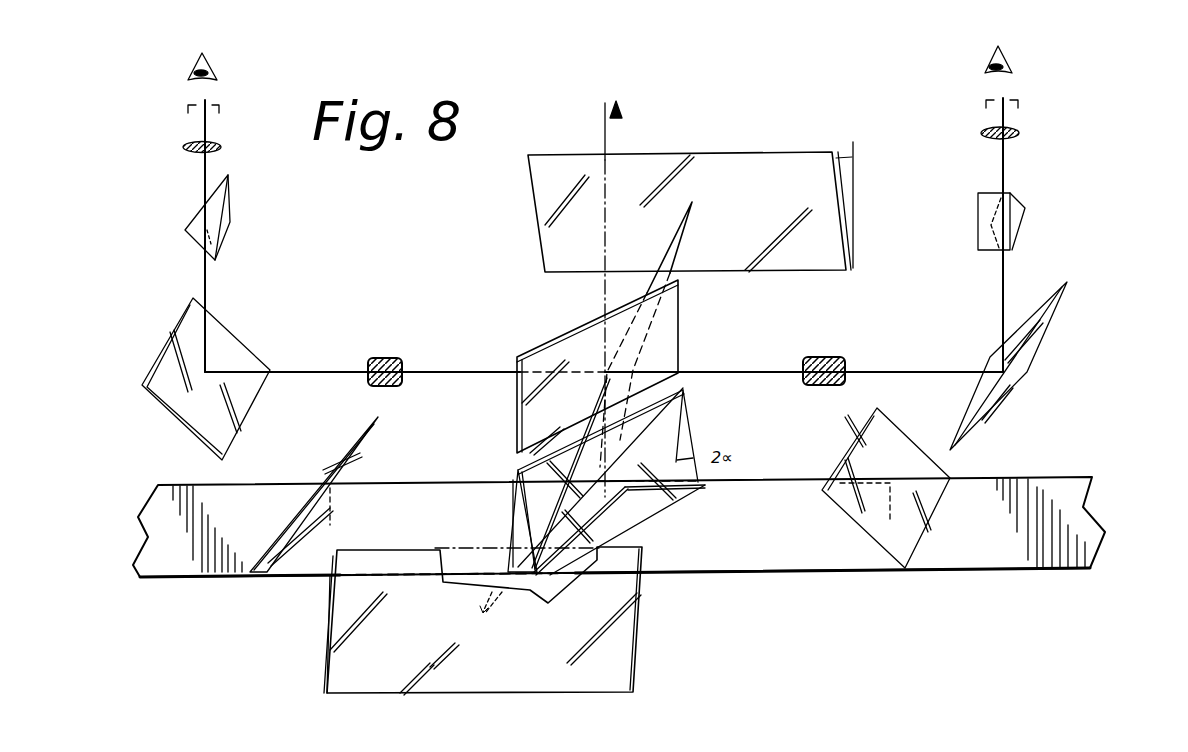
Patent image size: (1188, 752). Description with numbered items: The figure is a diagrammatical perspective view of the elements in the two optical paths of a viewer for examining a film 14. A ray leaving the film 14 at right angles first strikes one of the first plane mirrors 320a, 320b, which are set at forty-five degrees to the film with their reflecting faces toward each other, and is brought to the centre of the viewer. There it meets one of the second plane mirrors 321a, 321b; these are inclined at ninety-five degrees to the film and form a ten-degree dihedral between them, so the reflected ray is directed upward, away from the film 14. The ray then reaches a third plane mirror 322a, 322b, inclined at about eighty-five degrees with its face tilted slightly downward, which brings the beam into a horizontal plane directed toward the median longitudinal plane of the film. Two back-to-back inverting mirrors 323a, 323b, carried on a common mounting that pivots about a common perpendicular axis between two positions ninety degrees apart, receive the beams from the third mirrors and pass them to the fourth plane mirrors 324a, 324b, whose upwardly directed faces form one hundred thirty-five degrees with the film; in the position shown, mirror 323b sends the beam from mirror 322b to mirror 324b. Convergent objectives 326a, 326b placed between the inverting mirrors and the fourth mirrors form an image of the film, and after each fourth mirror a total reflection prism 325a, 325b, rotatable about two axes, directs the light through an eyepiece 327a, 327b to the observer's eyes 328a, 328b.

The film 14 is at (1013, 548).
The first plane mirror 320a is at (265, 566).
The first plane mirror 320b is at (890, 540).
The second plane mirror 321a is at (514, 486).
The second plane mirror 321b is at (638, 493).
The third plane mirror 322a is at (758, 170).
The third plane mirror 322b is at (620, 628).
The inverting mirror 323a is at (545, 348).
The inverting mirror 323b is at (587, 327).
The fourth plane mirror 324a is at (185, 335).
The fourth plane mirror 324b is at (1022, 350).
The total reflection prism 325a is at (232, 204).
The total reflection prism 325b is at (1025, 208).
The convergent objective 326a is at (378, 357).
The convergent objective 326b is at (826, 356).
The eyepiece 327a is at (222, 149).
The eyepiece 327b is at (1020, 130).
The eye of the observer 328a is at (222, 67).
The eye of the observer 328b is at (1016, 61).